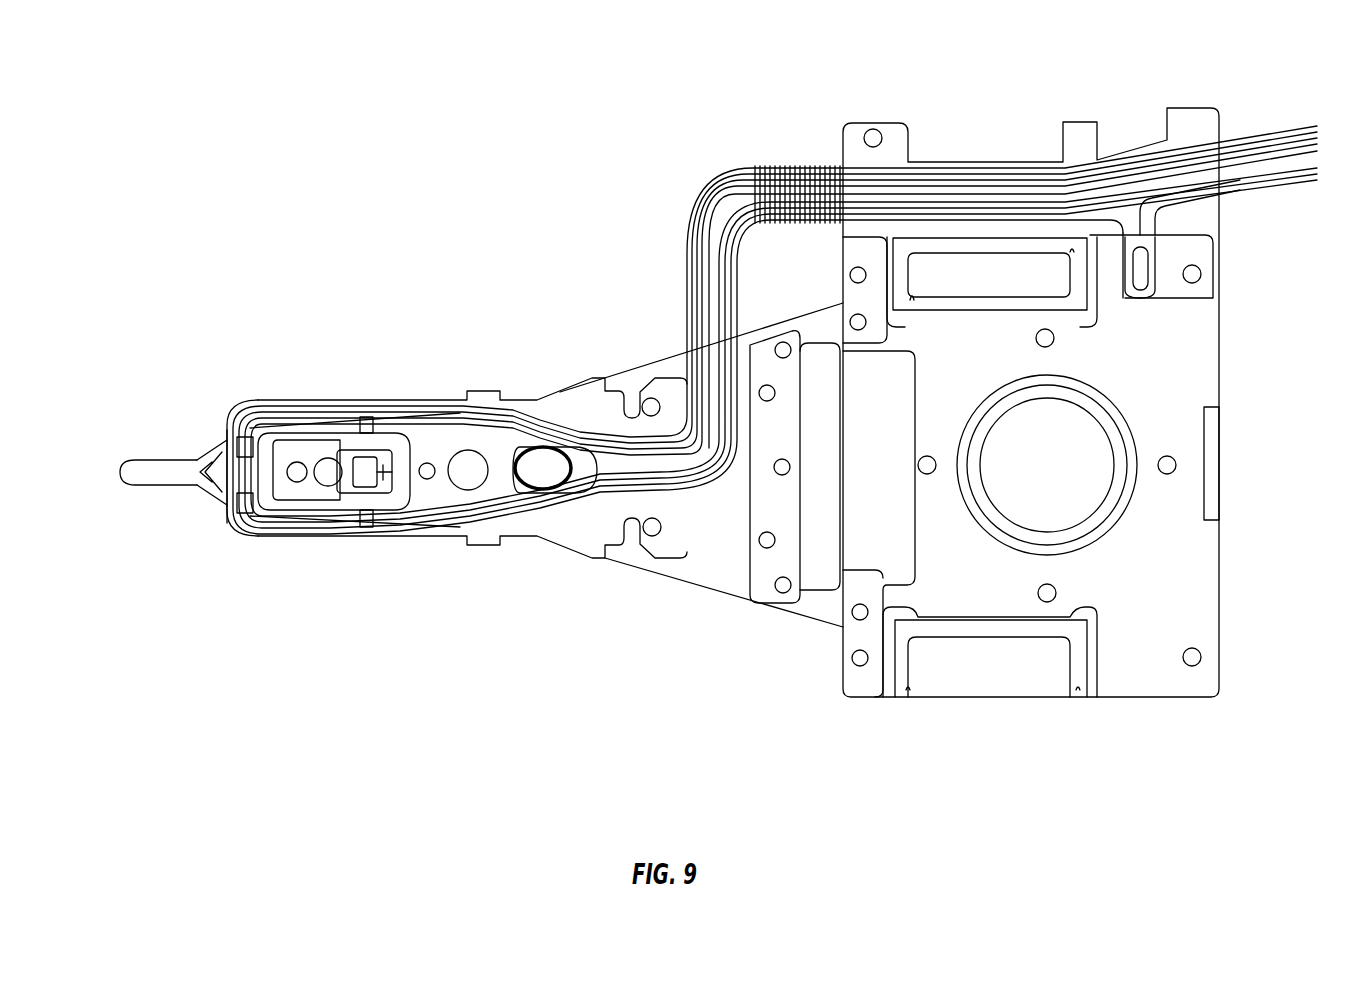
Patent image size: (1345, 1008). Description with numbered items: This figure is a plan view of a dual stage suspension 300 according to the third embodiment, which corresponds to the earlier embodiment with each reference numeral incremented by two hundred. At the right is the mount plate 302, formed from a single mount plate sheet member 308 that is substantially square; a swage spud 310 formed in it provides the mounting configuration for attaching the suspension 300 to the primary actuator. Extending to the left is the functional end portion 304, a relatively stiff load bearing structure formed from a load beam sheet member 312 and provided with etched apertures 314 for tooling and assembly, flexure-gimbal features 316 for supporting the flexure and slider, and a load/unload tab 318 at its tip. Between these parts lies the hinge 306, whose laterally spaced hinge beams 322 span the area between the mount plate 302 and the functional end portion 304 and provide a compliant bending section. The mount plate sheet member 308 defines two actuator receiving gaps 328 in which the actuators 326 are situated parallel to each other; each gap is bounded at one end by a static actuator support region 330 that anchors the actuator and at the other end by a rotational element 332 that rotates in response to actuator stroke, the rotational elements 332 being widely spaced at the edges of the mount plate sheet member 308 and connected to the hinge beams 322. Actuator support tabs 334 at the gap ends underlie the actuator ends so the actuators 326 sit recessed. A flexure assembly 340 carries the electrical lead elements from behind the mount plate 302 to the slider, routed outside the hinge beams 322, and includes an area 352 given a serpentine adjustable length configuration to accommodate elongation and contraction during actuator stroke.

The suspension 300 is at (738, 78).
The mount plate 302 is at (1237, 605).
The functional end portion 304 is at (410, 290).
The hinge 306 is at (750, 612).
The mount plate sheet member 308 is at (1166, 614).
The swage spud 310 is at (1075, 405).
The load beam sheet member 312 is at (578, 538).
The etched apertures 314 is at (543, 458).
The flexure-gimbal features 316 is at (348, 498).
The load/unload tab 318 is at (148, 466).
The hinge beams 322 is at (838, 318).
The actuators 326 is at (1006, 284).
The actuator receiving gaps 328 is at (920, 235).
The static actuator support region 330 is at (1103, 280).
The rotational elements 332 is at (848, 258).
The actuator support tabs 334 is at (1072, 240).
The flexure assembly 340 is at (1282, 106).
The adjustable length area 352 is at (786, 176).